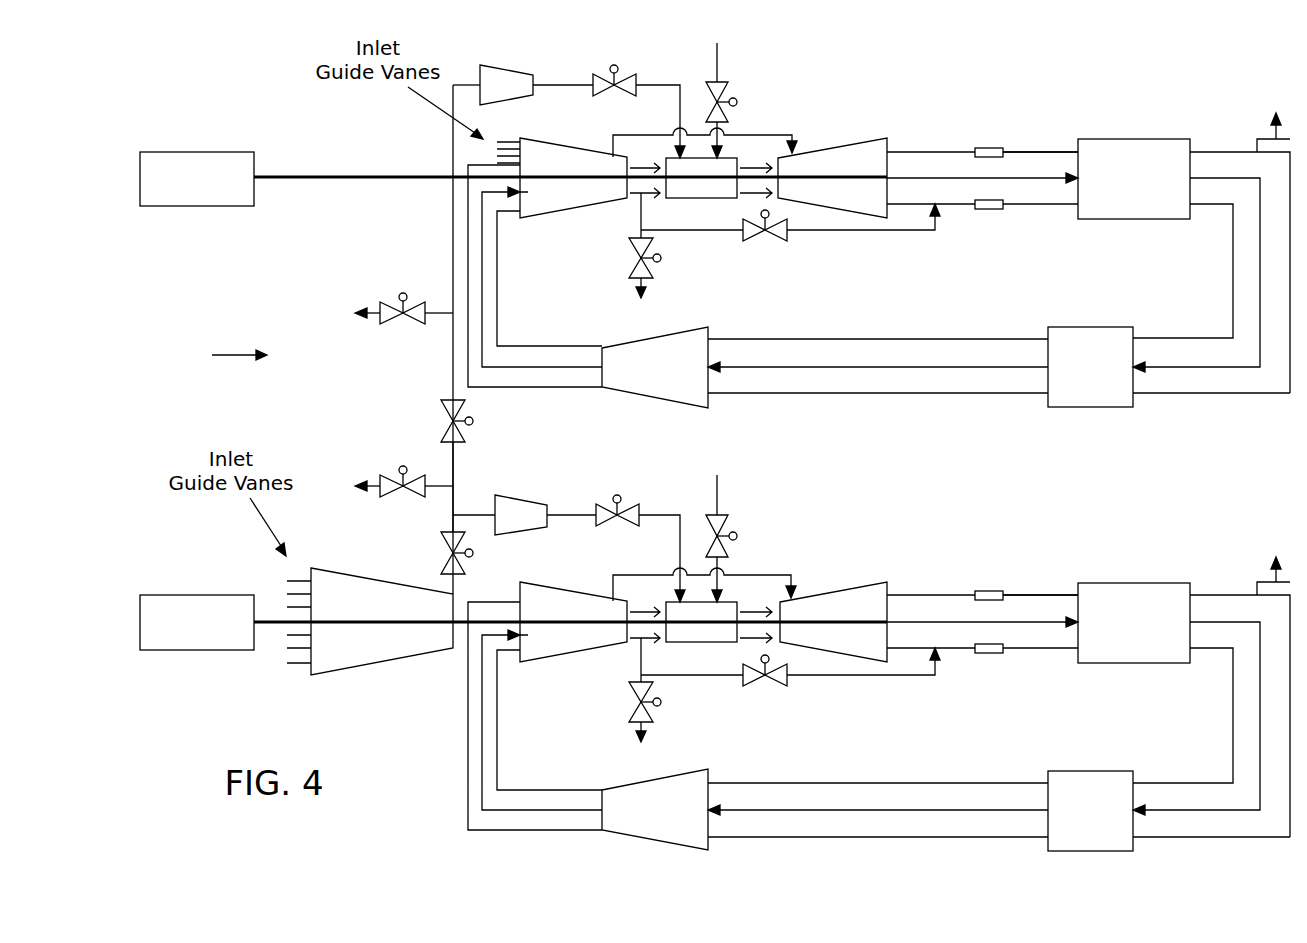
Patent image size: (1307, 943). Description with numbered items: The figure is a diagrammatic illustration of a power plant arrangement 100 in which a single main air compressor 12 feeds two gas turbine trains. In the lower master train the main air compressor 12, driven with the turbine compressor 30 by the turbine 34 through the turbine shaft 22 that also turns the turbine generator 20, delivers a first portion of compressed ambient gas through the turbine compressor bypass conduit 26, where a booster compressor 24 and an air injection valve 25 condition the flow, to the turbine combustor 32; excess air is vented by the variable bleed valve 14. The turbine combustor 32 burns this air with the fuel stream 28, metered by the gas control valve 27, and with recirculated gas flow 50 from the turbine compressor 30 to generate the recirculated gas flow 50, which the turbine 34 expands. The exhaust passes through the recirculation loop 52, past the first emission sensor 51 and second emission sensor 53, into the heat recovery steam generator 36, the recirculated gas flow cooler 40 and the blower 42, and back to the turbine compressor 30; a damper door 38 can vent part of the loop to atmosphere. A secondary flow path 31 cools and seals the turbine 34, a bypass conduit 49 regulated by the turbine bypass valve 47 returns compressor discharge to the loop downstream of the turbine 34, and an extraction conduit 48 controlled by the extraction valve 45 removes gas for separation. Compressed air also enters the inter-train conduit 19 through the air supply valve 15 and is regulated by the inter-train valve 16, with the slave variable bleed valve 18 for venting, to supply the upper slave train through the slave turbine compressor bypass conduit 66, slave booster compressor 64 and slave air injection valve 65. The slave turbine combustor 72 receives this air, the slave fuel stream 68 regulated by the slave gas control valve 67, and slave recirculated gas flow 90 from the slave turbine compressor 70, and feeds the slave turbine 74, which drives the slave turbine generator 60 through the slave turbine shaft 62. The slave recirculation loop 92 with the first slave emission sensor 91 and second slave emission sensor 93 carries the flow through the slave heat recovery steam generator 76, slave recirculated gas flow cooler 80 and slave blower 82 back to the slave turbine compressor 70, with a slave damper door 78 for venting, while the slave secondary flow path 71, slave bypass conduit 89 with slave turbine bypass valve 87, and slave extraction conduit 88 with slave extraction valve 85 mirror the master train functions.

The power plant arrangement 100 is at (219, 355).
The main air compressor 12 is at (390, 660).
The variable bleed valve 14 is at (399, 478).
The air supply valve 15 is at (445, 560).
The inter-train valve 16 is at (445, 421).
The slave variable bleed valve 18 is at (399, 305).
The inter-train conduit 19 is at (453, 470).
The turbine generator 20 is at (205, 595).
The turbine shaft 22 is at (290, 623).
The booster compressor 24 is at (522, 493).
The air injection valve 25 is at (618, 505).
The turbine compressor bypass conduit 26 is at (680, 548).
The gas control valve 27 is at (735, 535).
The fuel stream 28 is at (722, 488).
The turbine compressor 30 is at (573, 591).
The secondary flow path 31 is at (772, 575).
The turbine combustor 32 is at (718, 643).
The turbine 34 is at (835, 590).
The heat recovery steam generator 36 is at (1133, 583).
The damper door 38 is at (1256, 583).
The recirculated gas flow cooler 40 is at (1090, 771).
The blower 42 is at (712, 772).
The extraction valve 45 is at (630, 706).
The turbine bypass valve 47 is at (778, 688).
The extraction conduit 48 is at (638, 748).
The bypass conduit 49 is at (877, 678).
The recirculated gas flow 50 is at (906, 621).
The first emission sensor 51 is at (985, 592).
The recirculation loop 52 is at (1031, 594).
The second emission sensor 53 is at (982, 653).
The slave turbine generator 60 is at (205, 152).
The slave turbine shaft 62 is at (378, 179).
The slave booster compressor 64 is at (513, 65).
The slave air injection valve 65 is at (606, 74).
The slave turbine compressor bypass conduit 66 is at (680, 105).
The slave gas control valve 67 is at (735, 100).
The slave fuel stream 68 is at (714, 82).
The slave turbine compressor 70 is at (573, 147).
The slave secondary flow path 71 is at (772, 135).
The slave turbine combustor 72 is at (718, 199).
The slave turbine 74 is at (835, 146).
The slave heat recovery steam generator 76 is at (1133, 139).
The slave damper door 78 is at (1256, 139).
The slave recirculated gas flow cooler 80 is at (1090, 327).
The slave blower 82 is at (712, 330).
The slave extraction valve 85 is at (630, 262).
The slave turbine bypass valve 87 is at (778, 244).
The slave extraction conduit 88 is at (638, 303).
The slave bypass conduit 89 is at (877, 233).
The slave recirculated gas flow 90 is at (906, 177).
The first slave emission sensor 91 is at (985, 149).
The slave recirculation loop 92 is at (1031, 151).
The second slave emission sensor 93 is at (982, 209).